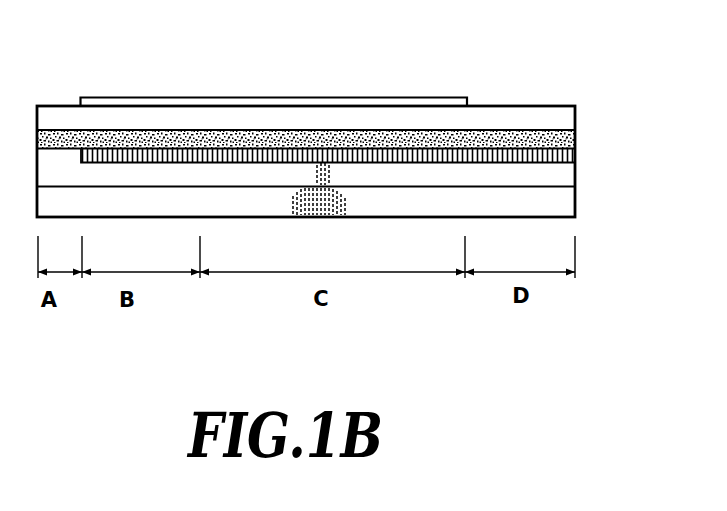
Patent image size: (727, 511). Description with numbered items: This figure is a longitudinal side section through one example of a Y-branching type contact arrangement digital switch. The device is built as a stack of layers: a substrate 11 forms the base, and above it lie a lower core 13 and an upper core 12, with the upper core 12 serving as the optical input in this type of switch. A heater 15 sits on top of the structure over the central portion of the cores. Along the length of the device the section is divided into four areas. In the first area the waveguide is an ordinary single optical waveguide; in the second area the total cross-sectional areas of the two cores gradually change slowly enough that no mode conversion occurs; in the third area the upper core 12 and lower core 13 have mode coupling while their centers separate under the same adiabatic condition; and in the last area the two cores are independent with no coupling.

The substrate 11 is at (575, 187).
The upper core 12 is at (575, 133).
The lower core 13 is at (575, 150).
The heater 15 is at (293, 96).